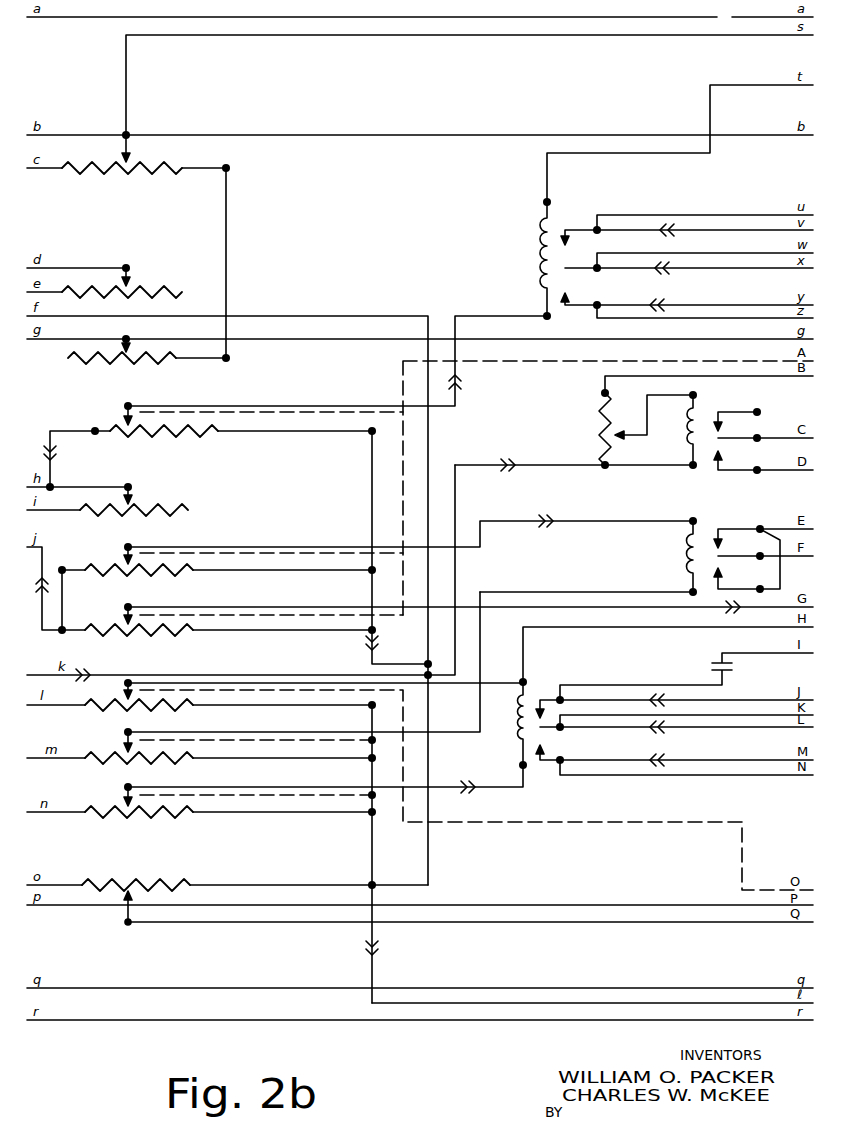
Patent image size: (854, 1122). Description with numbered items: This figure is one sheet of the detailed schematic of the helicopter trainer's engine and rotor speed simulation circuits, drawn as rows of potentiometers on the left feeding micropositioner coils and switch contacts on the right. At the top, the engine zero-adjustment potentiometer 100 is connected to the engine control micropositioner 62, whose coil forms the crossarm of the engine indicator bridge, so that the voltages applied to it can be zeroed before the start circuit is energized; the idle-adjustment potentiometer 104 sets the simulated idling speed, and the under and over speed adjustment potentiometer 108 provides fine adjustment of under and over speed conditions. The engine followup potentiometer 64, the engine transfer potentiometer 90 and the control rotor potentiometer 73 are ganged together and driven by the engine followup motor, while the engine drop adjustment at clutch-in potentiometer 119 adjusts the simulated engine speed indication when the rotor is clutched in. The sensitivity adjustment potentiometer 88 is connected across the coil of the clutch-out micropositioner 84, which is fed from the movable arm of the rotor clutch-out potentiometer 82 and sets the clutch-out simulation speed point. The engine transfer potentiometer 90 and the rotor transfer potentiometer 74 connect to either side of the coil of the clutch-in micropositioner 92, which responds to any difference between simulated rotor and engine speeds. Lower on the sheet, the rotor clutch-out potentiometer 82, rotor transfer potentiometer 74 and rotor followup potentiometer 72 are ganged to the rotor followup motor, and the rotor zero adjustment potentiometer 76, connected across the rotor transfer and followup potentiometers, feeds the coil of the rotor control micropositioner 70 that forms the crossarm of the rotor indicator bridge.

The engine zero-adjustment potentiometer 100 is at (195, 198).
The idle-adjustment potentiometer 104 is at (163, 283).
The under and over speed adjustment potentiometer 108 is at (187, 375).
The engine followup potentiometer 64 is at (238, 437).
The engine drop adjustment at clutch-in potentiometer 119 is at (193, 515).
The engine transfer potentiometer 90 is at (290, 585).
The control rotor potentiometer 73 is at (63, 638).
The rotor clutch-out potentiometer 82 is at (77, 710).
The rotor transfer potentiometer 74 is at (77, 763).
The rotor followup potentiometer 72 is at (73, 822).
The rotor zero adjustment potentiometer 76 is at (110, 892).
The engine control micropositioner 62 is at (533, 255).
The sensitivity adjustment potentiometer 88 is at (593, 412).
The clutch-out micropositioner 84 is at (707, 412).
The clutch-in micropositioner 92 is at (703, 537).
The rotor control micropositioner 70 is at (530, 732).